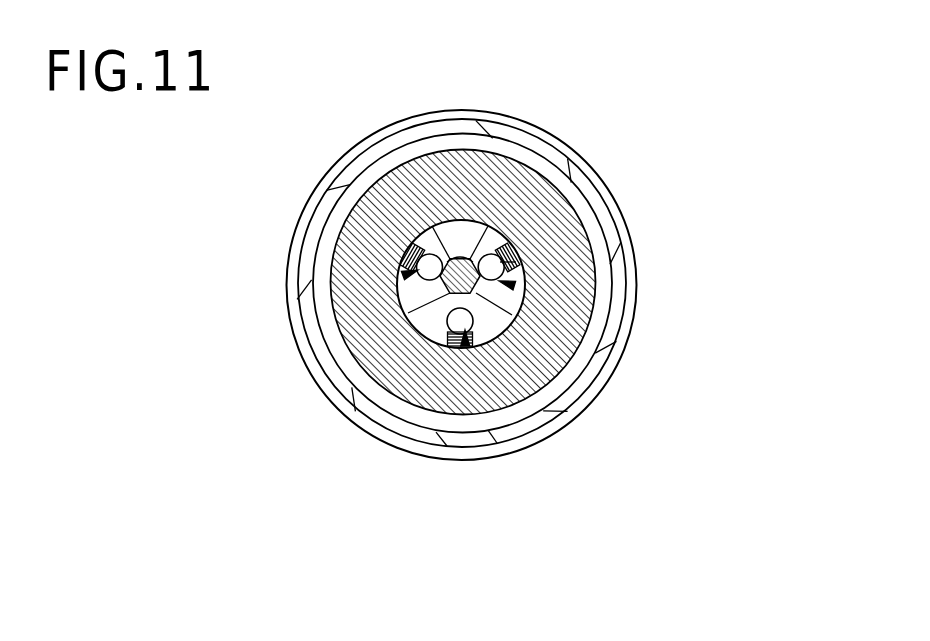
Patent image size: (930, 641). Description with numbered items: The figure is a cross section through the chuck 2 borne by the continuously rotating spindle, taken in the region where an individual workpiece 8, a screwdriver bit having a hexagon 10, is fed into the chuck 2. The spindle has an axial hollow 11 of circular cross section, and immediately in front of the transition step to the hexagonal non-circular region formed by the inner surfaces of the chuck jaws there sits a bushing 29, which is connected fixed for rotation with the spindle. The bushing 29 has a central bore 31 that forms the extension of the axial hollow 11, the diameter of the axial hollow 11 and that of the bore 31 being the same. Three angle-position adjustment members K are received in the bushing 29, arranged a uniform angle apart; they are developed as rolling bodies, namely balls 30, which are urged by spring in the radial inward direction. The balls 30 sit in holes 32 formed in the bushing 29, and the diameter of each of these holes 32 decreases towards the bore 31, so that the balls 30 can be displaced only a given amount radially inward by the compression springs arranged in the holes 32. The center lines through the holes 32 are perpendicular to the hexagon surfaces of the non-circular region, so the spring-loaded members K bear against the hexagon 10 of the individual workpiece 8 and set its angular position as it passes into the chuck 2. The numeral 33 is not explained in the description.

The chuck 2 is at (340, 141).
The individual workpiece 8 is at (430, 313).
The hexagon 10 is at (518, 320).
The axial hollow 11 is at (452, 242).
The central bore 31 is at (452, 242).
The bushing 29 is at (465, 242).
The balls 30 is at (510, 245).
The spring 33 is at (520, 257).
The holes 32 is at (505, 275).
The angle-position adjustment members K is at (410, 275).